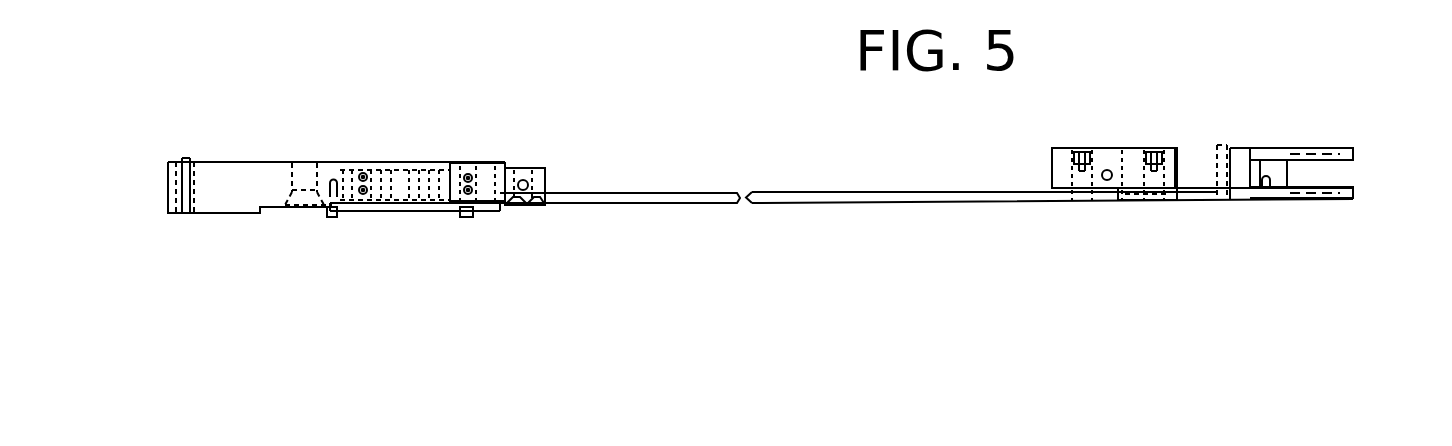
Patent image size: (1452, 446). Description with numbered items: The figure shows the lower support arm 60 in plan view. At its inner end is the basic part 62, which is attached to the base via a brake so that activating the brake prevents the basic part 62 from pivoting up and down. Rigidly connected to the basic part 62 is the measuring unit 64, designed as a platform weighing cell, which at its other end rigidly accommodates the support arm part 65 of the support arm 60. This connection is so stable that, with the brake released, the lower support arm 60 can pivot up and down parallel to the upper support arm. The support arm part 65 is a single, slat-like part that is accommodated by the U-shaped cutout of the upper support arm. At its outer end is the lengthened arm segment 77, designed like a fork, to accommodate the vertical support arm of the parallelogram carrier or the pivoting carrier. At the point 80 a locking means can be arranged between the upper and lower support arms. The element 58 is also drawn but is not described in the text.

The fork 58 is at (1328, 148).
The lower support arm 60 is at (670, 247).
The basic part 62 is at (277, 170).
The measuring unit 64 is at (433, 215).
The support arm part 65 is at (820, 204).
The lengthened arm segment 77 is at (1250, 160).
The point 80 is at (1105, 221).